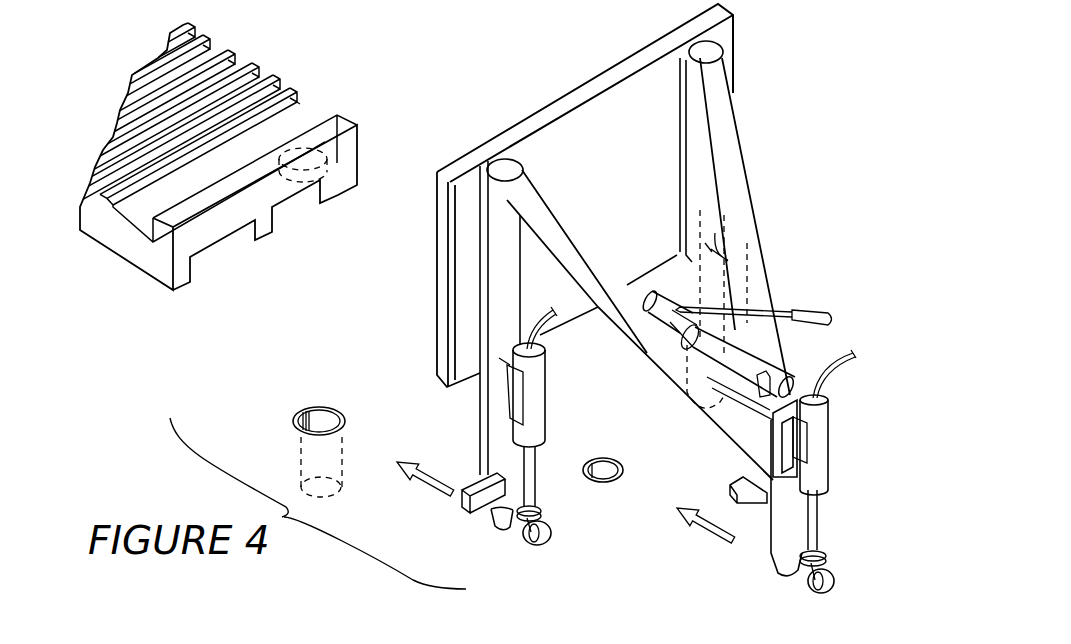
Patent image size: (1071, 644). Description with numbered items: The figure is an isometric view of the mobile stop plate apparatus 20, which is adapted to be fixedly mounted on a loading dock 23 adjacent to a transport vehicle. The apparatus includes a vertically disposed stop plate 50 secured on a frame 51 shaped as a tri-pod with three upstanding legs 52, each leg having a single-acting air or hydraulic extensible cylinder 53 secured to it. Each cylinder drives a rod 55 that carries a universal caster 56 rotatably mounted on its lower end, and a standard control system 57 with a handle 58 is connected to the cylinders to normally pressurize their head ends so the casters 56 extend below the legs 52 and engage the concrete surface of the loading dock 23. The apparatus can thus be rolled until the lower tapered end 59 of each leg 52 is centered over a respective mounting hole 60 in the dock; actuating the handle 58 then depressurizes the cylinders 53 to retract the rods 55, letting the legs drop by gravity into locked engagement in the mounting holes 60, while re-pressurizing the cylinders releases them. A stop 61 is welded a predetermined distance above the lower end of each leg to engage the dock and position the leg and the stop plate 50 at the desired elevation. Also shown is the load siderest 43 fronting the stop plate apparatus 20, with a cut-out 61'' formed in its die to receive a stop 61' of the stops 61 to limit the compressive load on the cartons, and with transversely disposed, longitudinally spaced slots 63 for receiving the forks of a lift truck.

The mobile stop plate apparatus 20 is at (490, 82).
The loading dock 23 is at (652, 573).
The load siderest 43 is at (140, 266).
The stop plate 50 is at (443, 298).
The frame 51 is at (745, 108).
The legs 52 is at (703, 168).
The extensible cylinder 53 is at (547, 377).
The rod 55 is at (533, 474).
The universal caster 56 is at (543, 548).
The control system 57 is at (762, 302).
The handle 58 is at (815, 314).
The lower tapered end 59 is at (497, 525).
The mounting hole 60 is at (323, 428).
The stop 61 is at (582, 488).
The stop 61' is at (658, 273).
The cut-out 61'' is at (343, 188).
The slots 63 is at (283, 137).